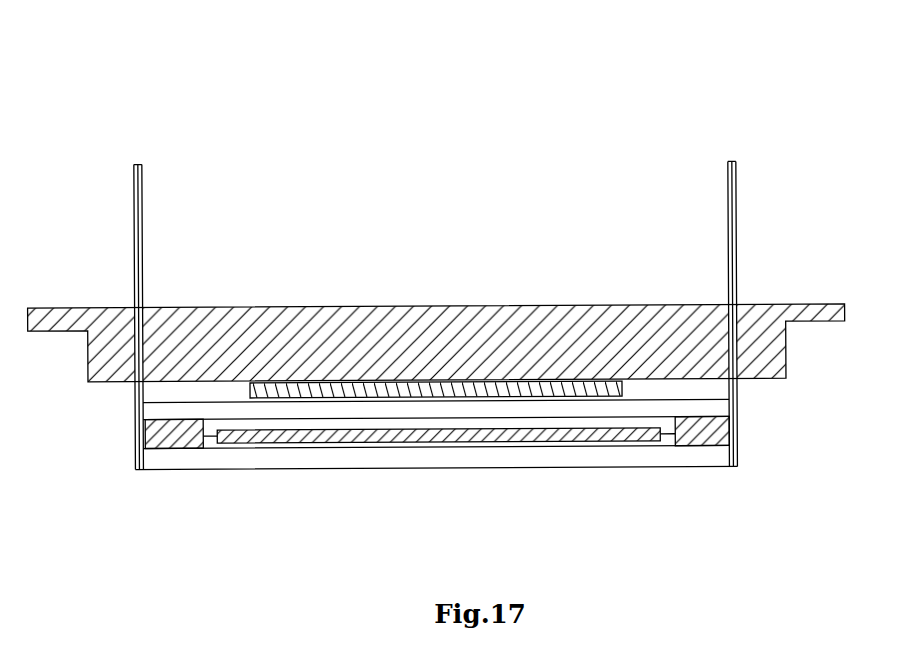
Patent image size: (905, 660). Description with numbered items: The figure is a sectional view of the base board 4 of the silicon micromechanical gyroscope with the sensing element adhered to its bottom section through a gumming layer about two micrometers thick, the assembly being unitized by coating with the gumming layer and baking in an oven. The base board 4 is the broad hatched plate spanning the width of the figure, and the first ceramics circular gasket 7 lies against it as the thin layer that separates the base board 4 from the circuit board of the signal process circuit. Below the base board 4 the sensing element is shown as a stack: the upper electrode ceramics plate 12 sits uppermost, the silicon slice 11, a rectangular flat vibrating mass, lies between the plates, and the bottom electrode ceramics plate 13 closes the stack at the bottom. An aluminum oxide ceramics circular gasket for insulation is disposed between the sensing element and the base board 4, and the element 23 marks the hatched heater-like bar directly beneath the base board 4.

The base board 4 is at (697, 323).
The first ceramics circular gasket 7 is at (605, 385).
The heating element 23 is at (508, 385).
The upper electrode ceramics plate 12 is at (442, 412).
The silicon slice 11 is at (362, 433).
The bottom electrode ceramics plate 13 is at (270, 457).